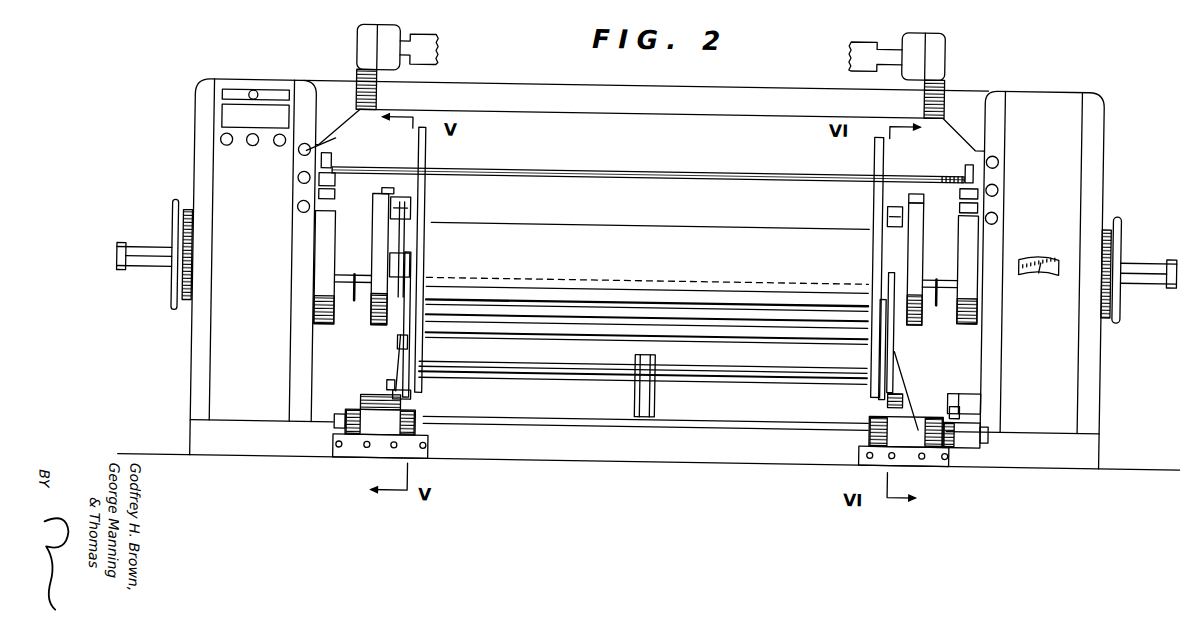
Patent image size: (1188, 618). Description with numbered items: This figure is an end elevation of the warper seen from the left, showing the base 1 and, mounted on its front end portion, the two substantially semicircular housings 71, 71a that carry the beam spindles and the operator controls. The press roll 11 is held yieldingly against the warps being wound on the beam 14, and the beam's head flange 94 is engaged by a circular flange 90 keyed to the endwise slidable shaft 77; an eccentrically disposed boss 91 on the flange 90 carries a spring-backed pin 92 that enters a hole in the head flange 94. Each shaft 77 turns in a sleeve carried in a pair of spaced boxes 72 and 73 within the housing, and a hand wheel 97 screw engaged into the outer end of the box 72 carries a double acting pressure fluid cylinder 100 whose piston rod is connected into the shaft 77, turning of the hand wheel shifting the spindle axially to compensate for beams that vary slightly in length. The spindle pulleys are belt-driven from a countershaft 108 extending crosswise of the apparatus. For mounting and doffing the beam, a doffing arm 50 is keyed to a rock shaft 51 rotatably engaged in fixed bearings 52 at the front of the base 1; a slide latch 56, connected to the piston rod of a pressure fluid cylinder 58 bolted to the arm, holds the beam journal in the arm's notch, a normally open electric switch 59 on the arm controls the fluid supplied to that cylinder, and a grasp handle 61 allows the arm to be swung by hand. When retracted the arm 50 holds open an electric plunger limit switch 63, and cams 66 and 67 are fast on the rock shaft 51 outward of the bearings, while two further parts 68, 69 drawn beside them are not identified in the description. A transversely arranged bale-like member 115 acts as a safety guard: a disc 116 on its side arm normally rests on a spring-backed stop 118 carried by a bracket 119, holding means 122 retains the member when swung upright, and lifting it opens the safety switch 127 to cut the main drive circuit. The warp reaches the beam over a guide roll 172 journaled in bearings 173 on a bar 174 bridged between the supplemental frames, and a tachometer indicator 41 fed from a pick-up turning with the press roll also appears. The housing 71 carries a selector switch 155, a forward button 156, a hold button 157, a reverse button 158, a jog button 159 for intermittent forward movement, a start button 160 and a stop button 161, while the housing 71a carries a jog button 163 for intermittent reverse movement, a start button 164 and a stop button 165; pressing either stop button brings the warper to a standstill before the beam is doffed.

The base 1 is at (192, 440).
The press roll 11 is at (565, 317).
The beam 14 is at (543, 222).
The tachometer indicator 41 is at (1040, 266).
The arm 50 is at (375, 391).
The rock shaft 51 is at (577, 422).
The fixed bearings 52 is at (408, 454).
The slide latch 56 is at (410, 292).
The pressure fluid cylinder 58 is at (395, 390).
The electric switch 59 is at (404, 341).
The grasp handle 61 is at (405, 236).
The electric plunger limit switch 63 is at (413, 400).
The cam 66 is at (960, 433).
The cam 67 is at (971, 437).
The switch 68 is at (953, 405).
The switch housing 69 is at (975, 398).
The housing 71 is at (225, 359).
The housing 71a is at (1062, 375).
The box 72 is at (181, 317).
The box 73 is at (318, 312).
The shaft 77 is at (356, 304).
The circular flange 90 is at (380, 229).
The boss 91 is at (384, 196).
The spring-backed pin 92 is at (408, 196).
The head flange 94 is at (424, 151).
The hand wheel 97 is at (172, 212).
The double acting pressure fluid cylinder 100 is at (144, 263).
The countershaft 108 is at (758, 372).
The bale-like member 115 is at (618, 172).
The disc 116 is at (331, 163).
The spring-backed stop 118 is at (300, 200).
The bracket 119 is at (297, 204).
The holding means 122 is at (334, 222).
The safety switch 127 is at (336, 144).
The selector switch 155 is at (252, 94).
The forward button 156 is at (218, 146).
The hold button 157 is at (247, 151).
The reverse button 158 is at (279, 150).
The jog button 159 is at (306, 148).
The start button 160 is at (296, 185).
The stop button 161 is at (297, 213).
The jog button 163 is at (995, 150).
The start button 164 is at (997, 177).
The stop button 165 is at (997, 212).
The guide roll 172 is at (428, 45).
The bearings 173 is at (362, 48).
The bar 174 is at (611, 93).